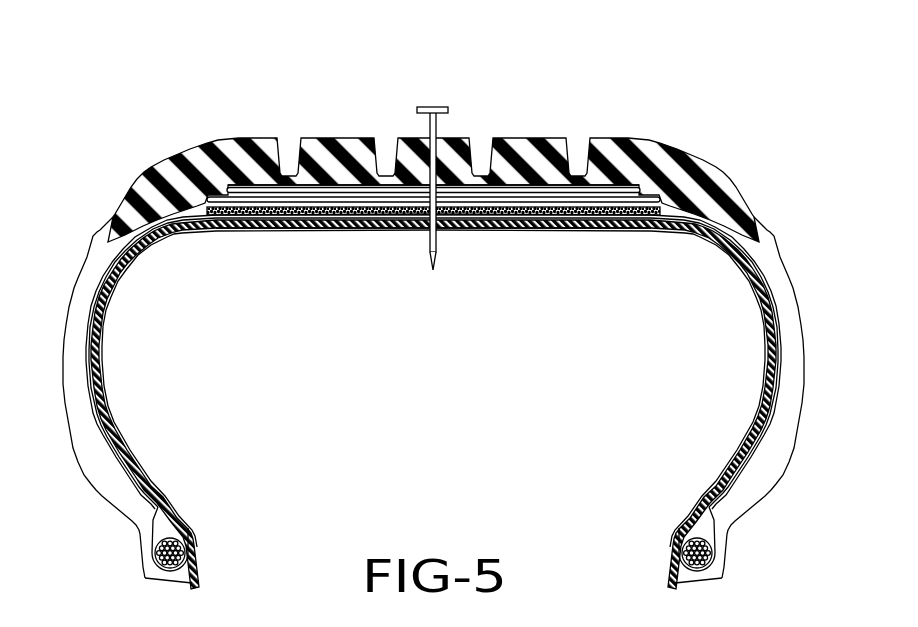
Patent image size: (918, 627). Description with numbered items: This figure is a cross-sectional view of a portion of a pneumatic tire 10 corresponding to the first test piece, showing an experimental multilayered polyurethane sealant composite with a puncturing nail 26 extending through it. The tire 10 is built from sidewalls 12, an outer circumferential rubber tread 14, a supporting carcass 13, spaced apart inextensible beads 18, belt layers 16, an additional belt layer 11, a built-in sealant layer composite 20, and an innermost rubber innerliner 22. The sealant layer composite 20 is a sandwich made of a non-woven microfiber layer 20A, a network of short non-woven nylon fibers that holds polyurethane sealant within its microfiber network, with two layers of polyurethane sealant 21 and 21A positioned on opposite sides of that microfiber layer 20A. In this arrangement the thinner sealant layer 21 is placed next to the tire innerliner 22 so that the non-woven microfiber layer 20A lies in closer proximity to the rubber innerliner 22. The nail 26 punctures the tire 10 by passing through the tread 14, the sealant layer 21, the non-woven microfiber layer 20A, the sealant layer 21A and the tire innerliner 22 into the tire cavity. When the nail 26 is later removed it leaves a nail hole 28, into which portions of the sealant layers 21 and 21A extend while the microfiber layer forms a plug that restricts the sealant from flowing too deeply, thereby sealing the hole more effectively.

The pneumatic tire 10 is at (434, 312).
The additional belt layer 11 is at (382, 187).
The sidewalls 12 is at (63, 357).
The supporting carcass 13 is at (522, 231).
The outer circumferential rubber tread 14 is at (340, 140).
The belt layers 16 is at (553, 200).
The inextensible beads 18 is at (166, 557).
The sealant layer composite 20 is at (593, 227).
The non-woven microfiber layer 20A is at (478, 231).
The sealant layer 21 is at (380, 213).
The sealant layer 21A is at (318, 231).
The rubber innerliner 22 is at (258, 231).
The nail 26 is at (432, 256).
The nail hole 28 is at (437, 148).